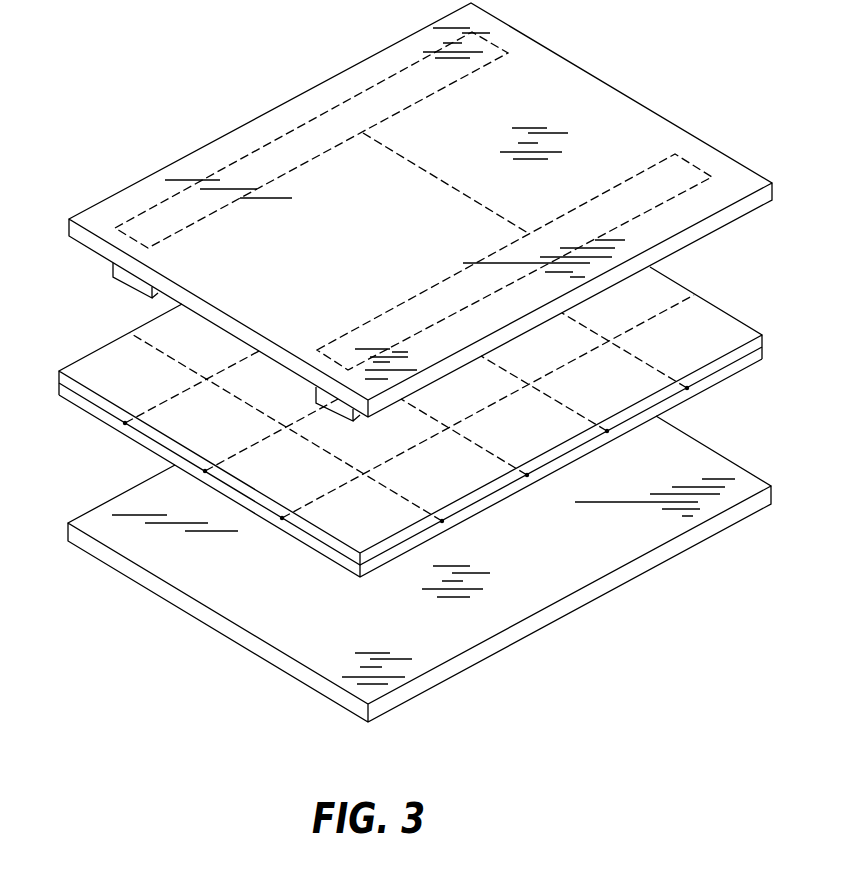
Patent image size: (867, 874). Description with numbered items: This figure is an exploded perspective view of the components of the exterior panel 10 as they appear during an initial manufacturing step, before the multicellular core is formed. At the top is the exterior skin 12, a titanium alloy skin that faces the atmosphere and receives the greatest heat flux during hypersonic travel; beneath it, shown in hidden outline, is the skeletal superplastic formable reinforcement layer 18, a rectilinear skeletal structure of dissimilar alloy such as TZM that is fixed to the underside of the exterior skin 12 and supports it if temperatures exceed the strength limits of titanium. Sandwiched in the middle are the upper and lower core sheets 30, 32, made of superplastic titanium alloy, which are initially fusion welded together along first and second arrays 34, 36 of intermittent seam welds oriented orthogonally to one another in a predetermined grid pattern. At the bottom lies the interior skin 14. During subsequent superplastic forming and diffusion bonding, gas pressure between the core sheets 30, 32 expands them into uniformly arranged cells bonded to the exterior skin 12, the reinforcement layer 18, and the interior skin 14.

The exterior panel 10 is at (178, 47).
The exterior skin 12 is at (630, 118).
The interior skin 14 is at (748, 478).
The skeletal superplastic formable reinforcement (SFR) layer 18 is at (155, 225).
The upper core sheet 30 is at (747, 338).
The lower core sheet 32 is at (762, 358).
The first array of intermittent seam welds 34 is at (172, 355).
The second array of intermittent seam welds 36 is at (171, 400).